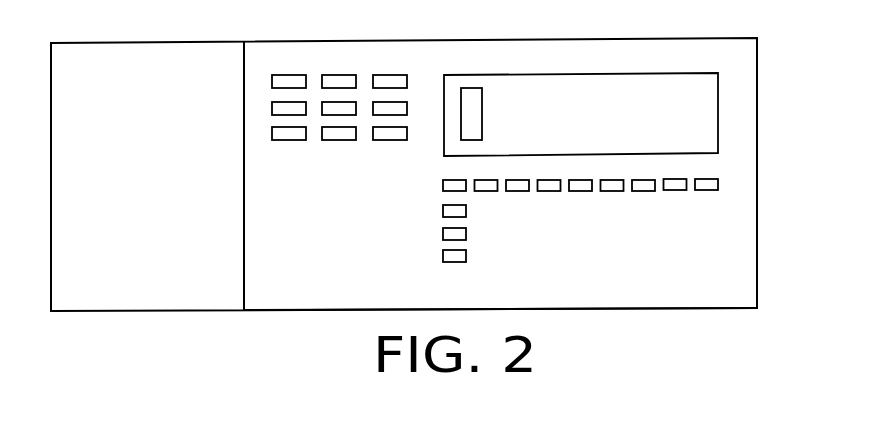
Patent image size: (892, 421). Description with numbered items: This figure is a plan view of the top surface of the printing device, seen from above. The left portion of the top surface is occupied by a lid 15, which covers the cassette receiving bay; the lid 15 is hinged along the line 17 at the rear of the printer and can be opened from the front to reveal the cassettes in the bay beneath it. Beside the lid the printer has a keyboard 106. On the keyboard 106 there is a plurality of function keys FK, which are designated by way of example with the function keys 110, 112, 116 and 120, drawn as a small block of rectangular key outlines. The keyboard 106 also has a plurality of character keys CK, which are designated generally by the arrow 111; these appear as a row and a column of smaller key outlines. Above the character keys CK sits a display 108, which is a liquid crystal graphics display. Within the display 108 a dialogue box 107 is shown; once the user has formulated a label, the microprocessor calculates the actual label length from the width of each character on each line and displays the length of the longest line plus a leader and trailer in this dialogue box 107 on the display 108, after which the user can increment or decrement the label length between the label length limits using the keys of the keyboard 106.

The hinge line 17 is at (86, 43).
The lid 15 is at (164, 190).
The keyboard 106 is at (358, 257).
The display 108 is at (601, 128).
The dialogue box 107 is at (470, 107).
The function keys FK is at (331, 94).
The function key 110 is at (350, 80).
The function key 112 is at (392, 80).
The function key 116 is at (272, 108).
The function key 120 is at (342, 132).
The character keys CK is at (638, 199).
The arrow 111 is at (724, 194).